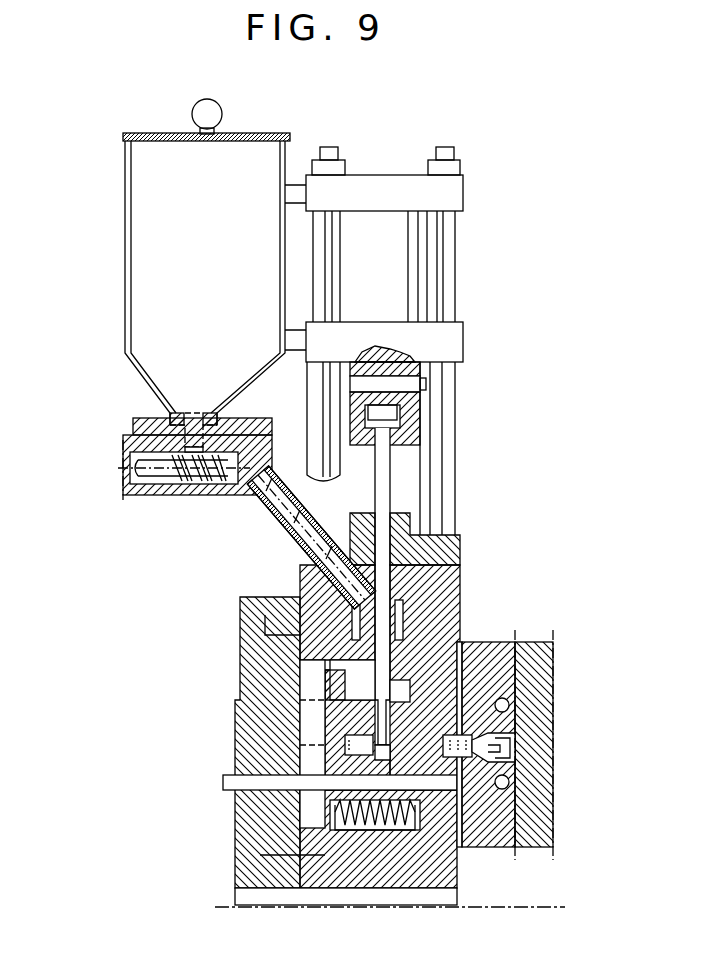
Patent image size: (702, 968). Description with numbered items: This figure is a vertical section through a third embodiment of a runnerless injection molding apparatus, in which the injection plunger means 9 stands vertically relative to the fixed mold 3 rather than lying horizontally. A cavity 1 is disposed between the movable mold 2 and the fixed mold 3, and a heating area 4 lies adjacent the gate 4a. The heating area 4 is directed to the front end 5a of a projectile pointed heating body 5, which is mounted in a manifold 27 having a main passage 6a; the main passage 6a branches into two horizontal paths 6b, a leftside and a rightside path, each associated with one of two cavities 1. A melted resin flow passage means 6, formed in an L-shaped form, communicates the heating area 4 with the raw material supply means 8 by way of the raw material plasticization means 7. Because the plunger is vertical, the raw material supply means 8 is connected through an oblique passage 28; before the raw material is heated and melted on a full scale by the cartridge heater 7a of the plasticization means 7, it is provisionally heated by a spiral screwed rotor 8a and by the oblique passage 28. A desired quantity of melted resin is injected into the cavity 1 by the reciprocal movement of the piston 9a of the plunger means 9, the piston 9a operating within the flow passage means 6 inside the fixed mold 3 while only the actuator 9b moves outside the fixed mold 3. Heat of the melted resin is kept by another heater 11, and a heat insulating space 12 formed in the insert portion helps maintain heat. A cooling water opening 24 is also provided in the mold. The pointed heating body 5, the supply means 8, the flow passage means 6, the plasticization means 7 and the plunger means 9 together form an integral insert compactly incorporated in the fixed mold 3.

The cavity 1 is at (505, 740).
The movable mold 2 is at (550, 866).
The fixed mold 3 is at (235, 912).
The heating area 4 is at (494, 788).
The gate 4a is at (520, 762).
The pointed heating body 5 is at (494, 701).
The front end 5a is at (520, 718).
The melted resin flow passage means 6 is at (377, 735).
The main passage 6a is at (398, 735).
The branch horizontal paths 6b is at (440, 758).
The raw material plasticization means 7 is at (440, 581).
The cartridge heater 7a is at (420, 630).
The raw material supply means 8 is at (128, 219).
The spiral screwed rotor 8a is at (205, 488).
The injection plunger means 9 is at (392, 450).
The piston 9a is at (462, 541).
The actuator 9b is at (410, 298).
The heater 11 is at (322, 798).
The heat insulating space 12 is at (352, 828).
The cooling water opening 24 is at (507, 693).
The manifold 27 is at (462, 698).
The oblique passage 28 is at (285, 506).